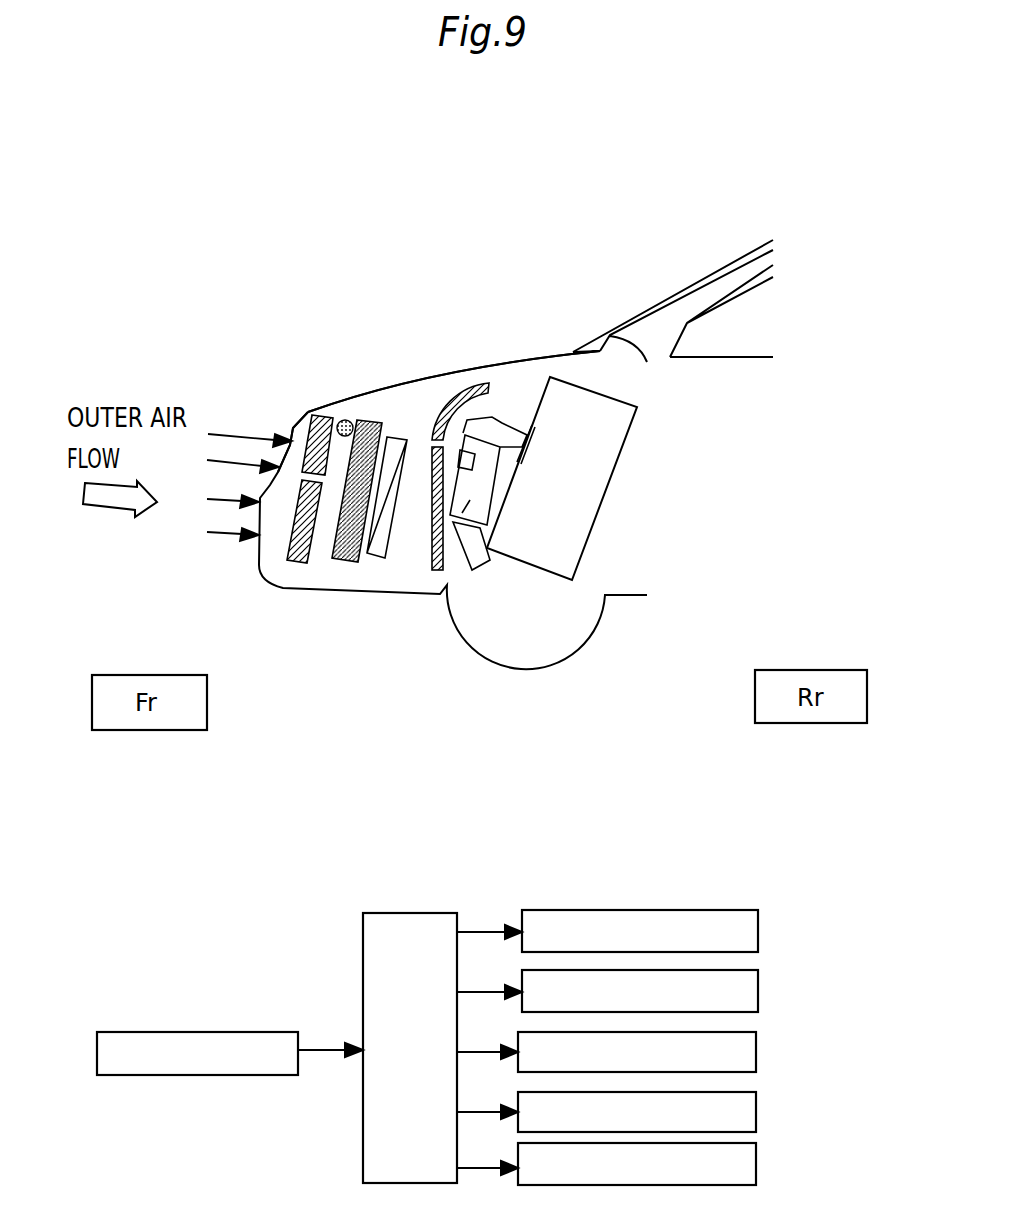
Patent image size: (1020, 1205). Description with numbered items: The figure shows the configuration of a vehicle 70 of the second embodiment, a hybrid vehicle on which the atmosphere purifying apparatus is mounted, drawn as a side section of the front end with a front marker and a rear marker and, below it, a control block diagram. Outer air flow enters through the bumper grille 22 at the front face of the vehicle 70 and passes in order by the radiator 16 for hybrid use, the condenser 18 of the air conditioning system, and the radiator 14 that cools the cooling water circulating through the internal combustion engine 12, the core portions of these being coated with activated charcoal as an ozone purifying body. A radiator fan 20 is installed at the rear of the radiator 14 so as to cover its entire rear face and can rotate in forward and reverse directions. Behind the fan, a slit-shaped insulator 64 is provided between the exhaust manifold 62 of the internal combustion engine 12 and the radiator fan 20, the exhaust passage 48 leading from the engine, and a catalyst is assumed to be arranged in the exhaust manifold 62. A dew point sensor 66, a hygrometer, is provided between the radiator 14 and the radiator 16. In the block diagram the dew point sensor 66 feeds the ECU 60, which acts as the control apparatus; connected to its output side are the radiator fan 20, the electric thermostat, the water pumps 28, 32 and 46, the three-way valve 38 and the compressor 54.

The internal combustion engine 12 is at (617, 470).
The radiator 14 is at (370, 417).
The radiator for hybrid use 16 is at (315, 412).
The condenser 18 is at (300, 562).
The radiator fan 20 is at (397, 437).
The bumper grille 22 is at (292, 430).
The water pump 28 is at (758, 990).
The water pump 32 is at (717, 1052).
The three-way valve 38 is at (756, 1110).
The water pump 46 is at (756, 1052).
The exhaust passage 48 is at (480, 563).
The compressor 54 is at (756, 1163).
The ECU 60 is at (400, 913).
The exhaust manifold 62 is at (444, 575).
The slit-shaped insulator 64 is at (438, 416).
The dew point sensor 66 is at (343, 418).
The vehicle 70 is at (523, 350).